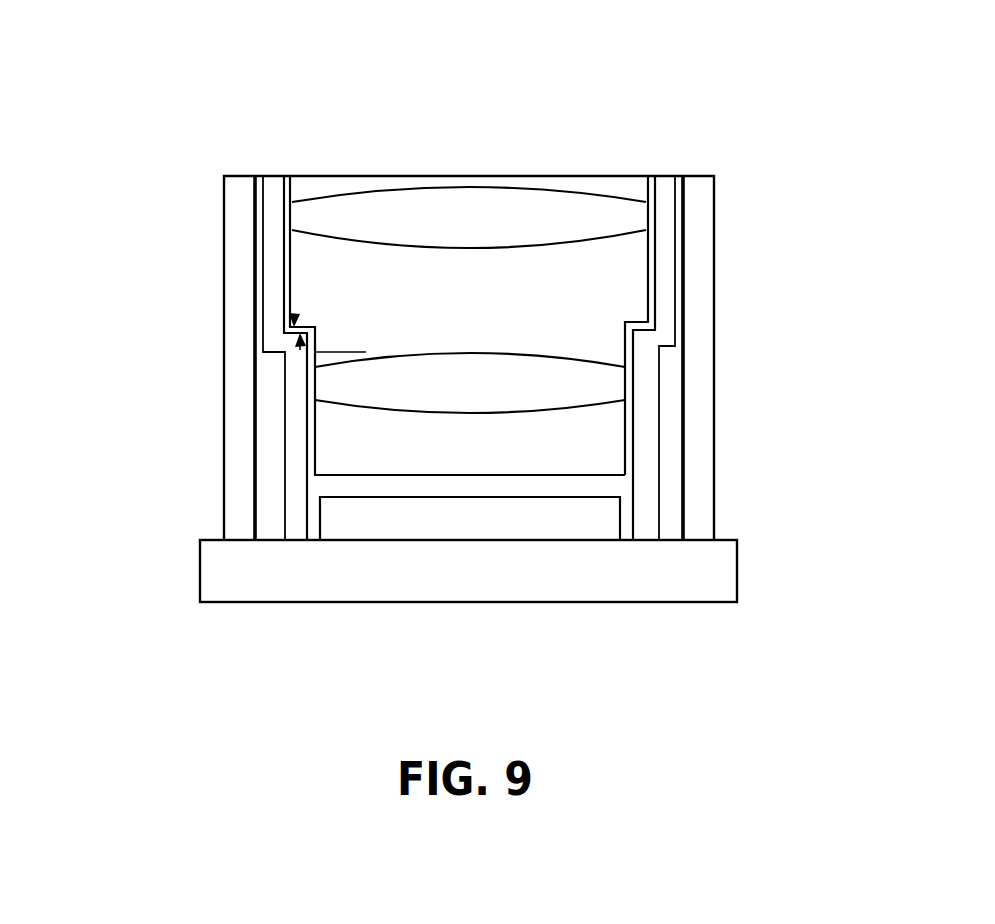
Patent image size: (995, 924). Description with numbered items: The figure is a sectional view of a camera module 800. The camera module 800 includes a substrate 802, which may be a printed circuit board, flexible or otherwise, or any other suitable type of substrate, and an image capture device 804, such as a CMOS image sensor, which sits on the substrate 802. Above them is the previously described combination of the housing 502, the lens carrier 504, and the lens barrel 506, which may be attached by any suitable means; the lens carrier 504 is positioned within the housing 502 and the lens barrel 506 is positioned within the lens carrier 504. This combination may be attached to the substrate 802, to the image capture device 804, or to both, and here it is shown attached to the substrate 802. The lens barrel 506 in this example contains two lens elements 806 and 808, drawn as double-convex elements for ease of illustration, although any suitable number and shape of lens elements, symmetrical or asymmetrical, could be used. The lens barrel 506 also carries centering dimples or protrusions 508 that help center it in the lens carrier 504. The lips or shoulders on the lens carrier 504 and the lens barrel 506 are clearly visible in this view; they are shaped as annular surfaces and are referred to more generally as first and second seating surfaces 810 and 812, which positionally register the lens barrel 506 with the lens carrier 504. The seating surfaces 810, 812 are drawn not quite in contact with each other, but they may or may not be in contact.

The camera module 800 is at (524, 66).
The substrate 802 is at (700, 585).
The image capture device 804 is at (383, 512).
The lens element 806 is at (488, 218).
The lens element 808 is at (348, 382).
The first seating surface 810 is at (294, 318).
The second seating surface 812 is at (366, 352).
The housing 502 is at (700, 395).
The lens carrier 504 is at (668, 290).
The lens barrel 506 is at (633, 188).
The centering protrusion 508 is at (292, 244).